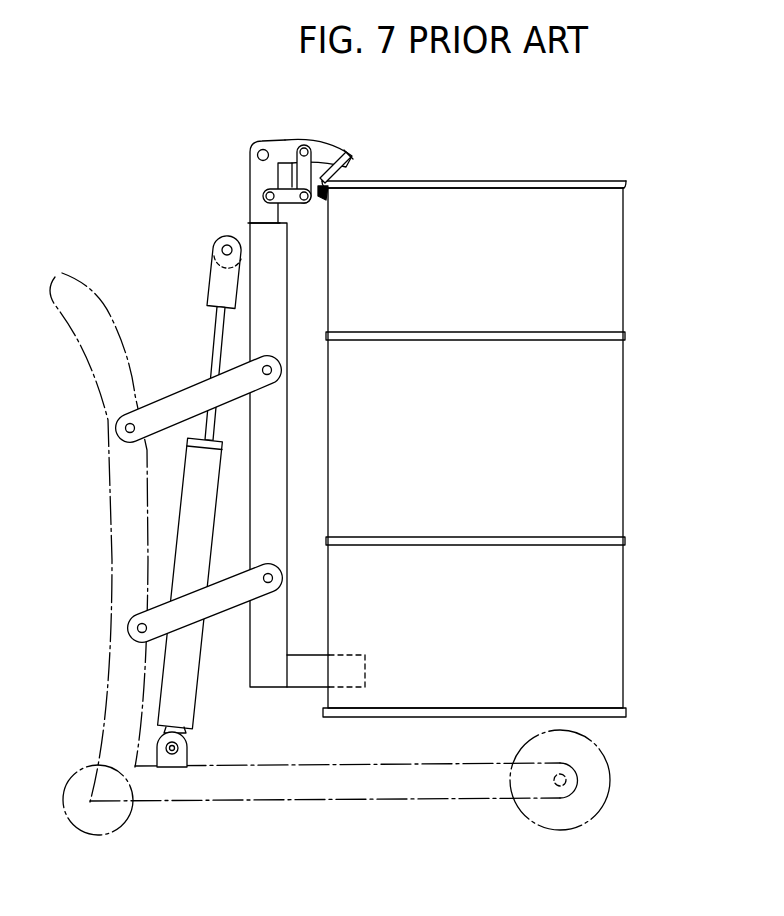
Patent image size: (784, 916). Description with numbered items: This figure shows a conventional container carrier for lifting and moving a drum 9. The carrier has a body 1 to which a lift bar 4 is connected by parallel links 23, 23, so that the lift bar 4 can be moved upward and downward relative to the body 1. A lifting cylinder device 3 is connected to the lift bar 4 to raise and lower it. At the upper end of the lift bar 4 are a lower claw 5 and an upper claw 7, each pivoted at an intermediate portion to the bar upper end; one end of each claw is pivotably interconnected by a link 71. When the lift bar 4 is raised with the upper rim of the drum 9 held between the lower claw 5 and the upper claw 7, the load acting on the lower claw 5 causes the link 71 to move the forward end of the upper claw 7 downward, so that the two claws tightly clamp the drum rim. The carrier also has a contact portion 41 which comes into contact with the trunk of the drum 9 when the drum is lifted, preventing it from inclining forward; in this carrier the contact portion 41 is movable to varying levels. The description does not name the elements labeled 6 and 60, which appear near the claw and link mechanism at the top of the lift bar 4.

The body 1 is at (245, 790).
The cylinder device 3 is at (195, 496).
The lift bar 4 is at (273, 434).
The lower claw 5 is at (318, 198).
The clamping arm 6 is at (323, 153).
The upper claw 7 is at (347, 167).
The drum 9 is at (585, 250).
The parallel links 23 is at (177, 403).
The contact portion 41 is at (330, 670).
The link 60 is at (288, 204).
The link 71 is at (278, 150).